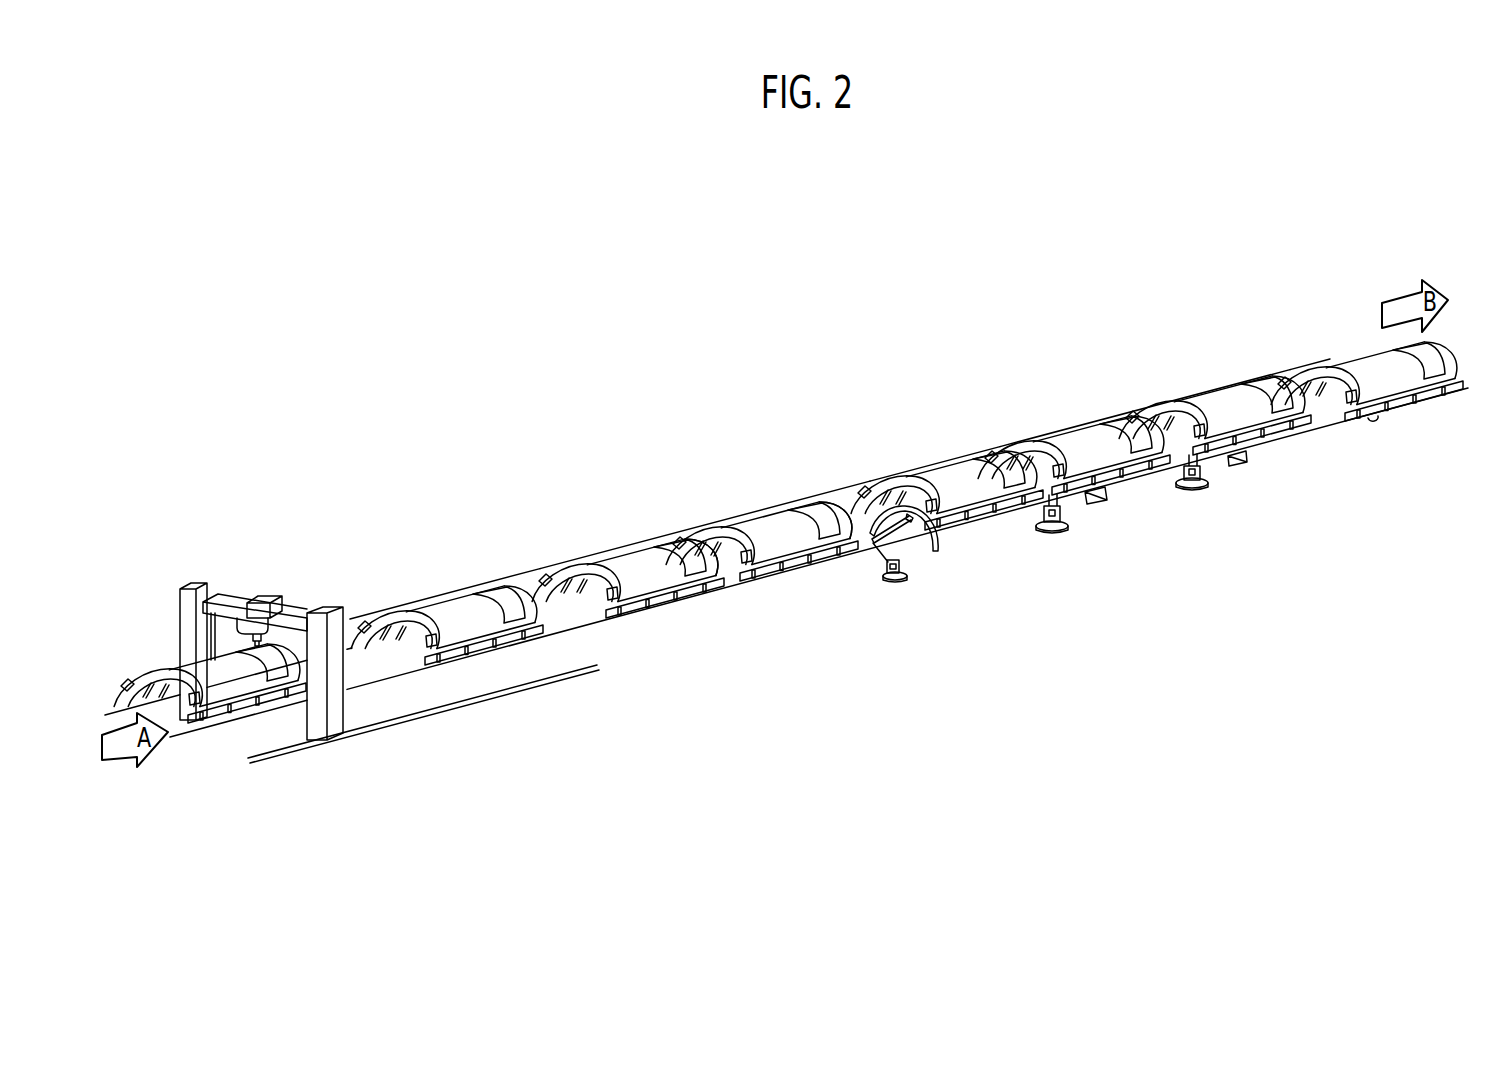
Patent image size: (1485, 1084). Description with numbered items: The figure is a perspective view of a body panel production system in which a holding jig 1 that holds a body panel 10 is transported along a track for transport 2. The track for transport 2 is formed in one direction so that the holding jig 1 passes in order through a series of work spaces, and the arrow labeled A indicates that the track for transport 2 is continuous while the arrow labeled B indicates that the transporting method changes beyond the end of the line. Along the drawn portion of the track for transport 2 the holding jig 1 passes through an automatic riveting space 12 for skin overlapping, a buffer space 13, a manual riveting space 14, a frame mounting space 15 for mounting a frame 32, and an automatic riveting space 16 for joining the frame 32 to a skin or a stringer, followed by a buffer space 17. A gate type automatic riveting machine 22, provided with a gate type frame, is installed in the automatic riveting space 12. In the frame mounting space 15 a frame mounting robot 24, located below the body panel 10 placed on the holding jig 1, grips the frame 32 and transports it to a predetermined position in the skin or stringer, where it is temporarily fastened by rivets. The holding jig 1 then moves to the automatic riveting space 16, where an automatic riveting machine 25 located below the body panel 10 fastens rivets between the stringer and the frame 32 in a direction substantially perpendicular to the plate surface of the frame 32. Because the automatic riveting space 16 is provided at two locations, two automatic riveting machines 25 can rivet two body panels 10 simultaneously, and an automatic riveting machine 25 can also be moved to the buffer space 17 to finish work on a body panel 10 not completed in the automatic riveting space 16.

The holding jig 1 is at (166, 652).
The track for transport 2 is at (856, 512).
The body panel 10 is at (263, 695).
The automatic riveting space for skin overlapping 12 is at (243, 546).
The buffer space 13 is at (463, 531).
The manual riveting space 14 is at (625, 508).
The frame mounting space 15 is at (943, 421).
The automatic riveting space for joining the frame 16 is at (1076, 391).
The buffer space 17 is at (1349, 296).
The gate type automatic riveting machine 22 is at (236, 621).
The frame mounting robot 24 is at (874, 549).
The automatic riveting machine 25 is at (1095, 505).
The frame 32 is at (937, 552).